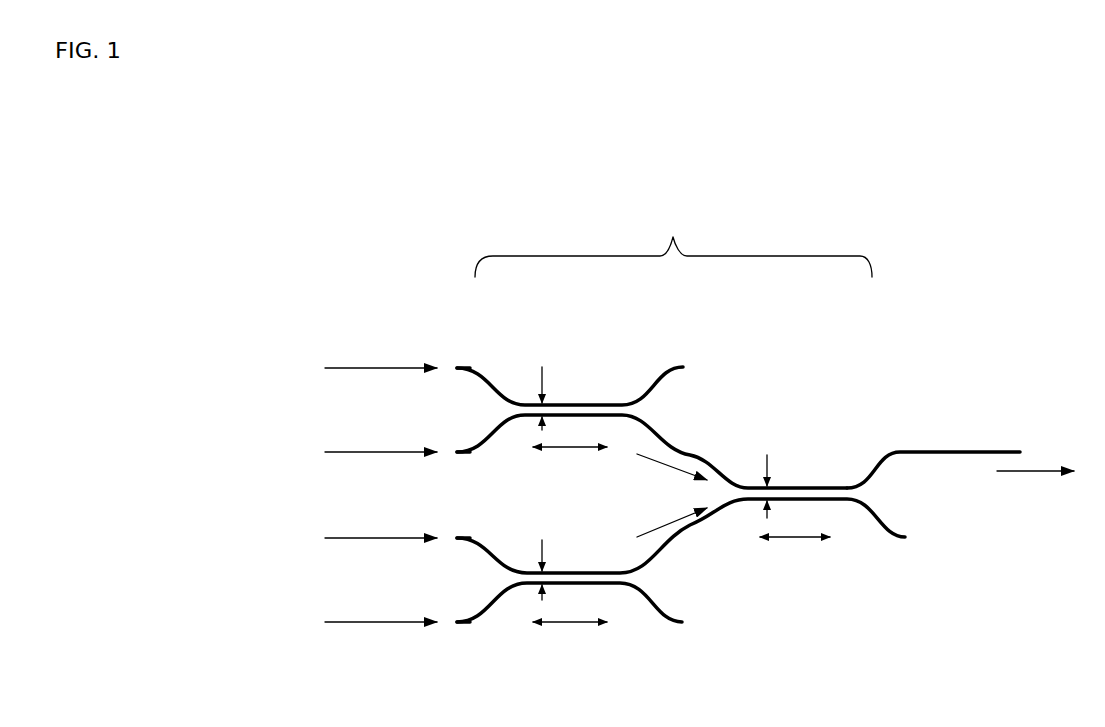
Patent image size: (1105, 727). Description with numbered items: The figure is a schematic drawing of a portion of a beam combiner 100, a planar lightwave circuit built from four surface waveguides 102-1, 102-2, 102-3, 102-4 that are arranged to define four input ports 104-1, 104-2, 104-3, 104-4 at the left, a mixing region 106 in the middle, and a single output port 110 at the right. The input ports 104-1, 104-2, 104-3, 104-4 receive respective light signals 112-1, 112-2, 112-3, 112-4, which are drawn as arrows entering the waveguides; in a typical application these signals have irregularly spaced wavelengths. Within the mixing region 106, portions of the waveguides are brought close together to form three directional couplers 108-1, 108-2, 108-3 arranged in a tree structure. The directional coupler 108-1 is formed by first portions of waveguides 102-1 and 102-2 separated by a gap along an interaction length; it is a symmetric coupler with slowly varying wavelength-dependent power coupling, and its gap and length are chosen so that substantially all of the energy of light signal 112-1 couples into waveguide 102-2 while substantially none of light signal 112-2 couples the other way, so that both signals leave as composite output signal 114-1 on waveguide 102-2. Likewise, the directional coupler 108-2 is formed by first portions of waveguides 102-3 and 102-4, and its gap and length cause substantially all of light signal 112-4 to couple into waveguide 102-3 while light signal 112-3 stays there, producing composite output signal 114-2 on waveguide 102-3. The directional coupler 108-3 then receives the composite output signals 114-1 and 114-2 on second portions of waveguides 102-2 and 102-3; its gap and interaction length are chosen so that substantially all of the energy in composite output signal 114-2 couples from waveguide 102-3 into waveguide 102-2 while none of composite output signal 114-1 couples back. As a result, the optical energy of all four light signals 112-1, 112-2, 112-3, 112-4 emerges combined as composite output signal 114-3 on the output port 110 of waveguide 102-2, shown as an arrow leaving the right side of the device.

The beam combiner 100 is at (407, 191).
The surface waveguide 102-1 is at (489, 374).
The surface waveguide 102-2 is at (663, 444).
The surface waveguide 102-3 is at (650, 548).
The surface waveguide 102-4 is at (477, 624).
The input port 104-1 is at (469, 366).
The input port 104-2 is at (469, 450).
The input port 104-3 is at (469, 536).
The input port 104-4 is at (469, 620).
The mixing region 106 is at (673, 242).
The directional coupler 108-1 is at (572, 384).
The directional coupler 108-2 is at (628, 647).
The directional coupler 108-3 is at (809, 458).
The output port 110 is at (948, 452).
The light signal 112-1 is at (348, 368).
The light signal 112-2 is at (348, 452).
The light signal 112-3 is at (348, 538).
The light signal 112-4 is at (348, 622).
The composite output signal 114-1 is at (650, 458).
The composite output signal 114-2 is at (704, 511).
The composite output signal 114-3 is at (1048, 473).